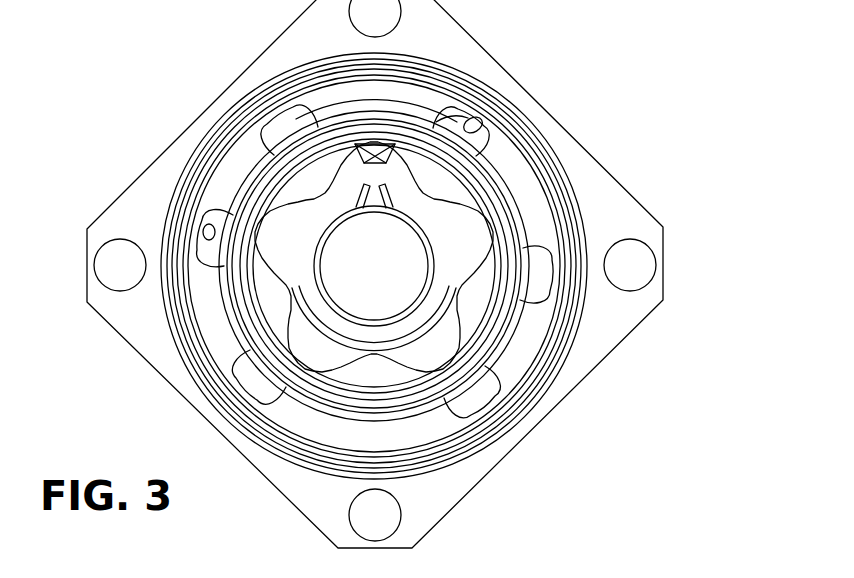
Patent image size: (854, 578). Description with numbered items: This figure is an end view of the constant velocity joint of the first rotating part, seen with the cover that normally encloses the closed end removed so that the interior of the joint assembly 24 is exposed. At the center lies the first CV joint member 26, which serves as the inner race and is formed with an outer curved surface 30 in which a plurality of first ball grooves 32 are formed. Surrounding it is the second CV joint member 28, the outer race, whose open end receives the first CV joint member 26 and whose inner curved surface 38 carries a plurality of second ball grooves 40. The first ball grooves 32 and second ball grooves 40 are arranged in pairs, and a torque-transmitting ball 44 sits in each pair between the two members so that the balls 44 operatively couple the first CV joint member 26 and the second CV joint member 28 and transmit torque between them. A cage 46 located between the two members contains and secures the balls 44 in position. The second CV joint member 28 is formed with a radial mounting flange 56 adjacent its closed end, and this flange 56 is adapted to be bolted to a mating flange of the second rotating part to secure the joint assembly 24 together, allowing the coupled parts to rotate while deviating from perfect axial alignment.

The joint assembly 24 is at (152, 99).
The first CV joint member 26 is at (382, 363).
The second CV joint member 28 is at (535, 182).
The outer curved surface 30 is at (277, 200).
The first ball grooves 32 is at (305, 330).
The inner curved surface 38 is at (452, 115).
The second ball grooves 40 is at (485, 130).
The torque-transmitting balls 44 is at (297, 127).
The cage 46 is at (282, 276).
The radial mounting flange 56 is at (602, 332).